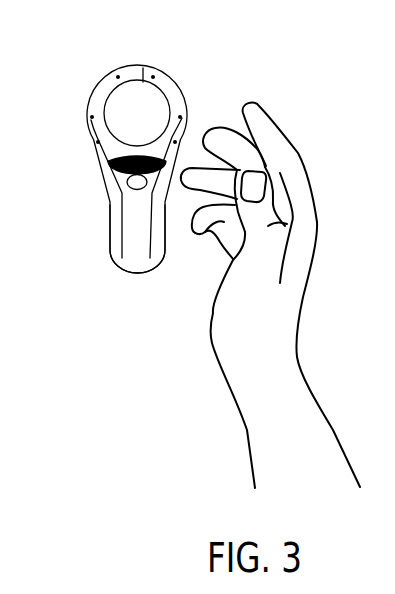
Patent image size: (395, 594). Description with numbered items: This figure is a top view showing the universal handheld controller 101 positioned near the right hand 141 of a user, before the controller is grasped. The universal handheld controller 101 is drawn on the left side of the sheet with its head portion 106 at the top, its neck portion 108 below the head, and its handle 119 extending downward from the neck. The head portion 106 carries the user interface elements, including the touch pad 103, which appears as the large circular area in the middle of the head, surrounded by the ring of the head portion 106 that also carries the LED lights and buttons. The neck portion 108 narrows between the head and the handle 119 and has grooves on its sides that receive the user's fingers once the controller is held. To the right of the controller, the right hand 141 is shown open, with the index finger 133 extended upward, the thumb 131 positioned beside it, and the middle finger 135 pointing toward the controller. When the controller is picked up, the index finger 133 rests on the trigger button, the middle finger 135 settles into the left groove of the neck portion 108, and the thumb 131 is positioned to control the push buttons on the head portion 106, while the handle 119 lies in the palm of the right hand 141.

The universal handheld controller 101 is at (182, 90).
The touch pad 103 is at (108, 92).
The head portion 106 is at (143, 68).
The neck portion 108 is at (112, 202).
The handle 119 is at (111, 247).
The thumb 131 is at (258, 170).
The index finger 133 is at (275, 121).
The middle finger 135 is at (233, 128).
The right hand 141 is at (317, 207).